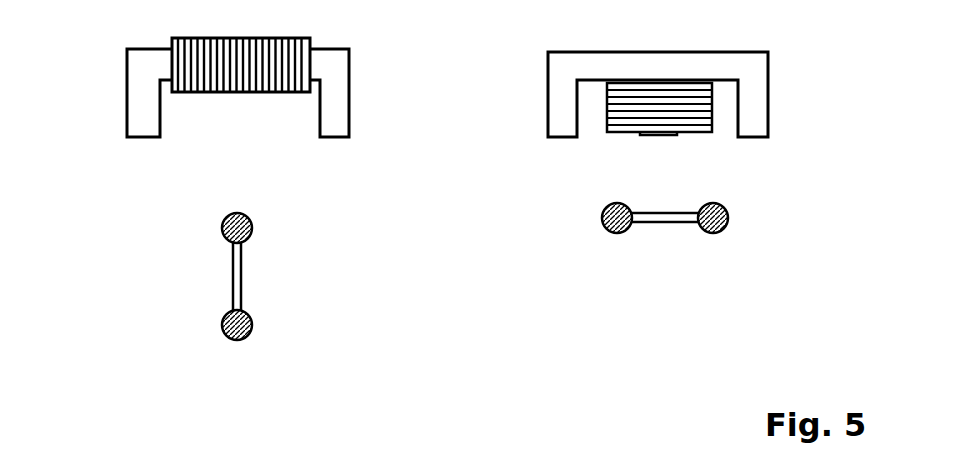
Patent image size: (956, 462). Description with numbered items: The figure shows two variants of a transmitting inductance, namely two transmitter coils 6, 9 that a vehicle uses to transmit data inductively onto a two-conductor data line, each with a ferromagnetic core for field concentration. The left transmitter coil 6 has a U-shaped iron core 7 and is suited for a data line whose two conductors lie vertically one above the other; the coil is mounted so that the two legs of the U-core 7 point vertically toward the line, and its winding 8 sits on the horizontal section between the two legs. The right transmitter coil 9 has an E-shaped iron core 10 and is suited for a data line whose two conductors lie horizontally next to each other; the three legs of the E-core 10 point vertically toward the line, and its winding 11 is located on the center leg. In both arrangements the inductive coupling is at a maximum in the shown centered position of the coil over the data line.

The left transmitter coil 6 is at (153, 180).
The U-shaped iron core 7 is at (147, 98).
The winding 8 is at (253, 92).
The right transmitter coil 9 is at (552, 183).
The E-shaped iron core 10 is at (563, 99).
The winding 11 is at (693, 132).